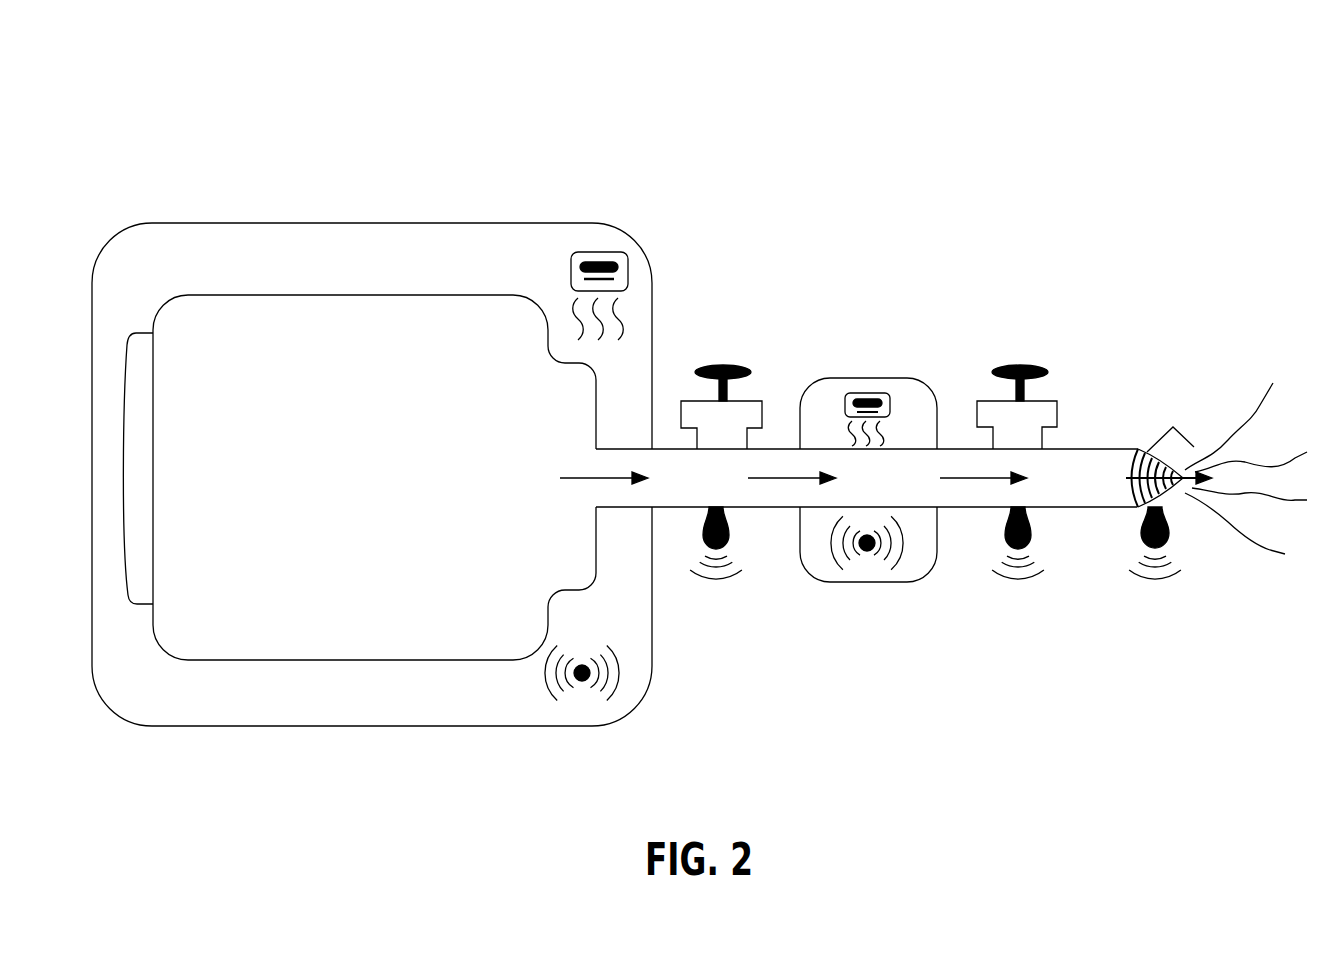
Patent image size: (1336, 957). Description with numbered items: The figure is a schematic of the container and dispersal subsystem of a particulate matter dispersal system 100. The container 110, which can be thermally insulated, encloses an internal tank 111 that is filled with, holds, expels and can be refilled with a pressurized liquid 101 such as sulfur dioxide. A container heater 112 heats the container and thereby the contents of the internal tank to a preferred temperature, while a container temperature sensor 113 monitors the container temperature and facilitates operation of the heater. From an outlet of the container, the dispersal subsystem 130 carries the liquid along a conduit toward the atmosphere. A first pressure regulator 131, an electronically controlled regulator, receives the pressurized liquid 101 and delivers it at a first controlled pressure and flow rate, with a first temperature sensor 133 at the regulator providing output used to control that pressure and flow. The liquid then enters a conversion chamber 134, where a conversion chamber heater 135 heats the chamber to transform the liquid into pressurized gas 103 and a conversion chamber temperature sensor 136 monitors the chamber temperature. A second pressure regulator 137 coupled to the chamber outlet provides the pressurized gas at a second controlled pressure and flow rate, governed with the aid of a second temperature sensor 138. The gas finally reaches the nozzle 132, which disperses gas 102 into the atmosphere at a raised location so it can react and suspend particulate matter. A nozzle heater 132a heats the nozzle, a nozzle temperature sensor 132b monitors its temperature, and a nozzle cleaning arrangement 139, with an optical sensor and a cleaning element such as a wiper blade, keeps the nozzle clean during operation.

The overall system 100 is at (222, 113).
The pressurized liquid 101 is at (351, 470).
The gas 102 is at (1297, 435).
The pressurized gas 103 is at (886, 477).
The container 110 is at (330, 223).
The internal tank 111 is at (197, 295).
The container heater 112 is at (592, 252).
The container temperature sensor 113 is at (608, 697).
The dispersal subsystem 130 is at (1108, 472).
The first pressure regulator 131 is at (724, 360).
The nozzle 132 is at (1170, 495).
The nozzle heater 132a is at (1138, 450).
The nozzle temperature sensor 132b is at (1152, 582).
The first temperature sensor 133 is at (706, 585).
The conversion chamber 134 is at (830, 377).
The conversion chamber heater 135 is at (893, 400).
The conversion chamber temperature sensor 136 is at (867, 551).
The second pressure regulator 137 is at (1020, 362).
The second temperature sensor 138 is at (1010, 582).
The nozzle cleaning arrangement 139 is at (1183, 437).